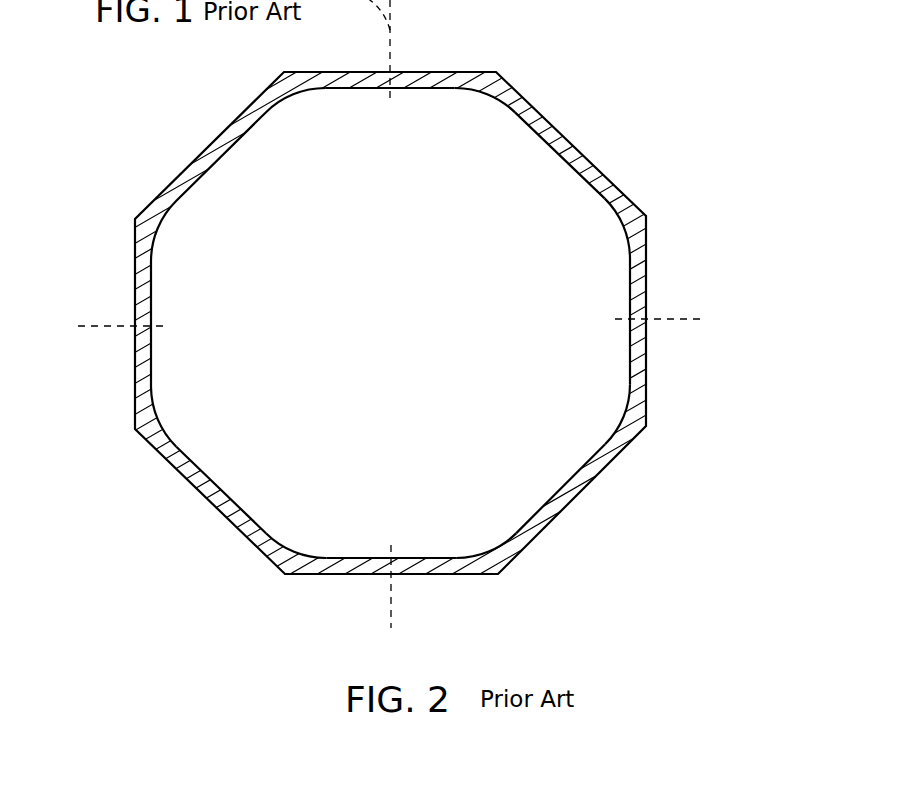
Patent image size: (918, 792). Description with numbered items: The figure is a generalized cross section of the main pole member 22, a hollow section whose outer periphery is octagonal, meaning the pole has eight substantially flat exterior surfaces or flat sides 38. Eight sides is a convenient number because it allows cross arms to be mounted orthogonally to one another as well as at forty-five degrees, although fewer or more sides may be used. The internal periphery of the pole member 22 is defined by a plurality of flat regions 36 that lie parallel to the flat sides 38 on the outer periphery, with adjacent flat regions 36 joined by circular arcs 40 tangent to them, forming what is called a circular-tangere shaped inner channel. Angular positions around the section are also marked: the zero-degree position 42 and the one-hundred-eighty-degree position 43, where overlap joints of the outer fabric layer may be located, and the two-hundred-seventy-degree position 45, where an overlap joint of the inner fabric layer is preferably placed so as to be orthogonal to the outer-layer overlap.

The main pole member 22 is at (636, 112).
The flat regions 36 is at (243, 136).
The flat sides 38 is at (208, 142).
The circular arcs 40 is at (298, 97).
The 0° position 42 is at (688, 317).
The 180° position 43 is at (92, 330).
The 270° position 45 is at (392, 612).